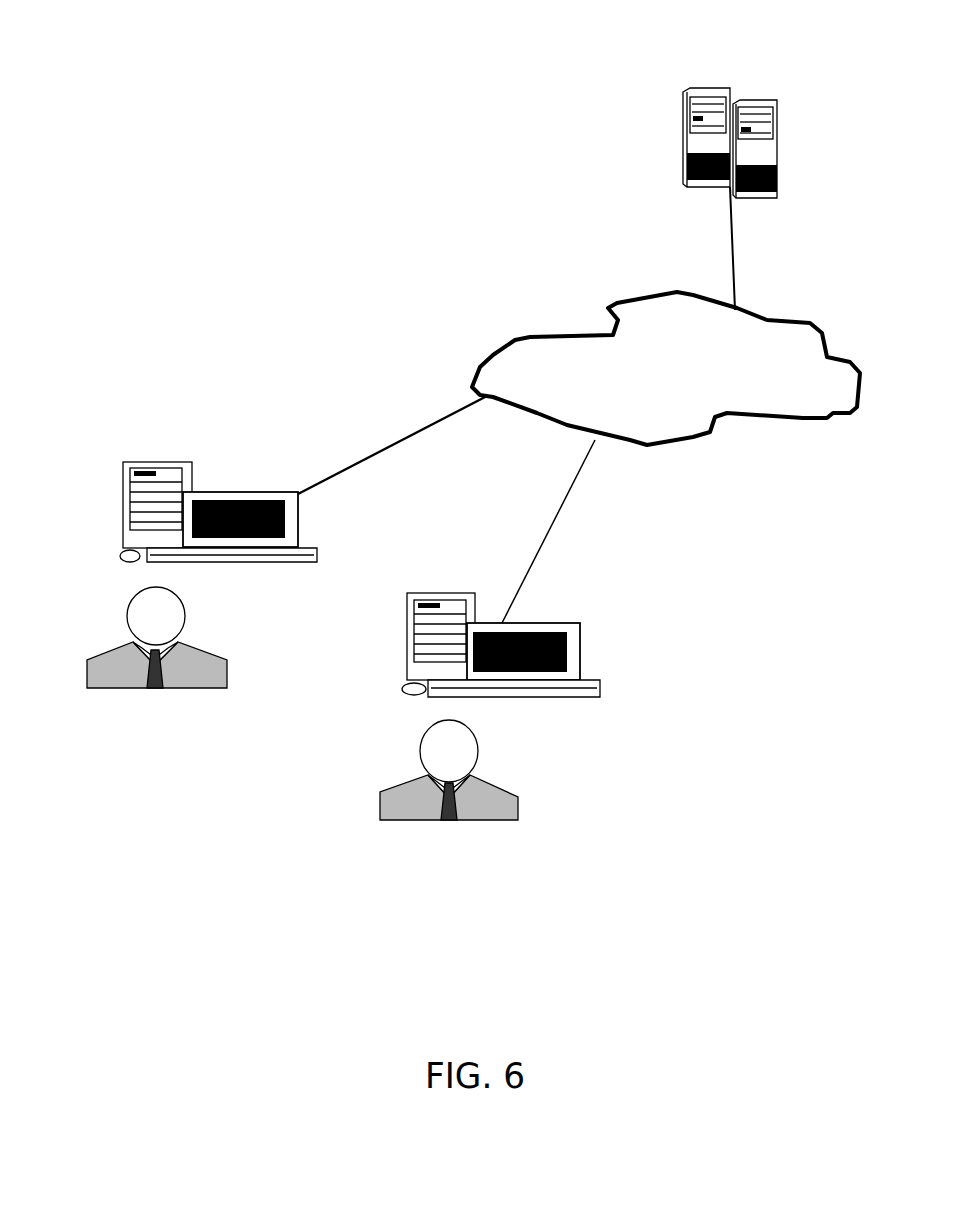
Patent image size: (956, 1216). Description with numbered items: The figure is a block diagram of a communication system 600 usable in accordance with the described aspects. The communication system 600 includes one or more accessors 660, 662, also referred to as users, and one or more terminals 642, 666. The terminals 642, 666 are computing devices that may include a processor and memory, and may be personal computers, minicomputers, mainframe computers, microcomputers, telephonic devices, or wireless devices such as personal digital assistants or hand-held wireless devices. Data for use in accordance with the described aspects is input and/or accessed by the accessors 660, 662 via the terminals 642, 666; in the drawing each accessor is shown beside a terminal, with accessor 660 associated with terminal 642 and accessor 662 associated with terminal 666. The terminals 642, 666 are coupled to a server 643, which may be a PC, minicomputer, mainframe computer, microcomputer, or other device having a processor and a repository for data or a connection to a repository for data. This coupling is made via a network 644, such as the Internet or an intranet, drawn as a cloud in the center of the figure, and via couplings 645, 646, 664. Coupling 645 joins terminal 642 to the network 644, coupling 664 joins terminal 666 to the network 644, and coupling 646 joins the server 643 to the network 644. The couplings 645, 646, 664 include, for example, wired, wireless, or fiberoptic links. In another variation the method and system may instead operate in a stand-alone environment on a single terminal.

The communication system 600 is at (170, 47).
The terminal 642 is at (158, 460).
The server 643 is at (708, 87).
The network 644 is at (530, 337).
The coupling 645 is at (338, 472).
The coupling 646 is at (733, 260).
The accessor 660 is at (118, 645).
The accessor 662 is at (497, 785).
The coupling 664 is at (572, 487).
The terminal 666 is at (577, 623).